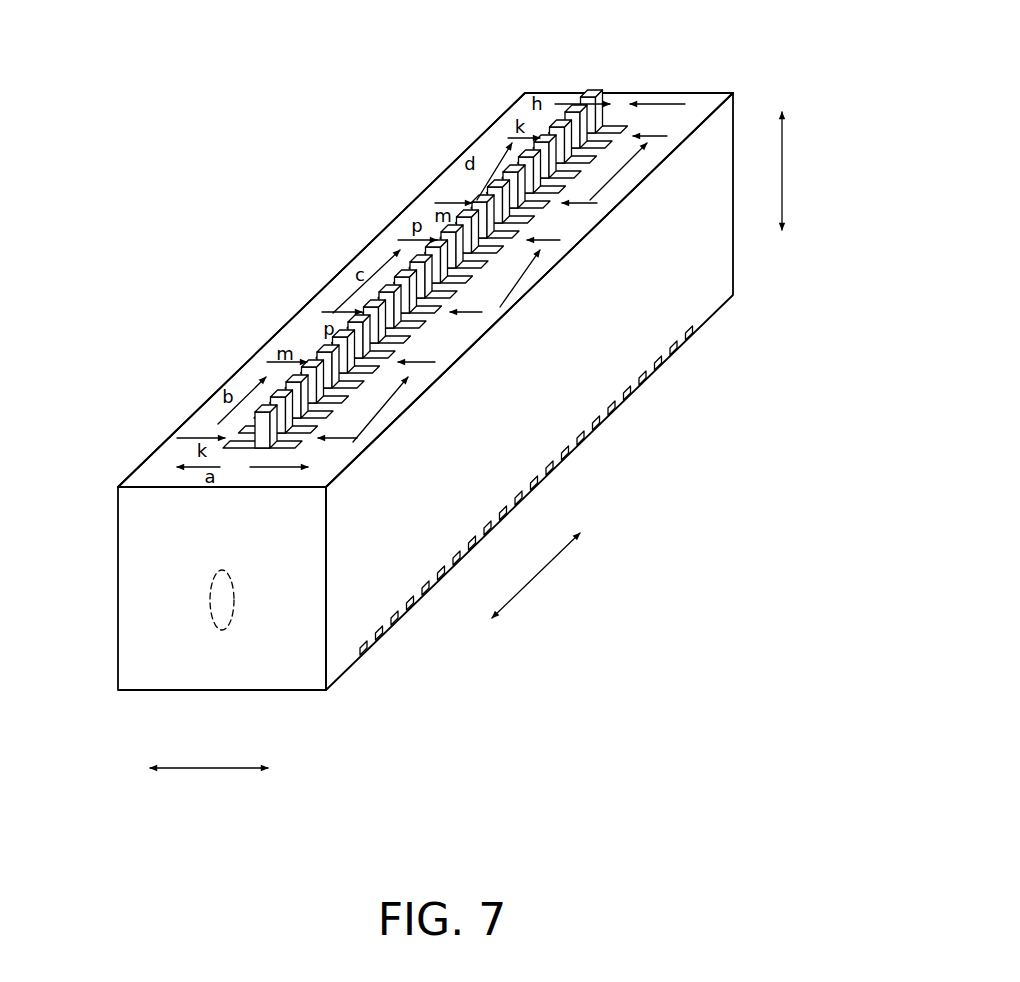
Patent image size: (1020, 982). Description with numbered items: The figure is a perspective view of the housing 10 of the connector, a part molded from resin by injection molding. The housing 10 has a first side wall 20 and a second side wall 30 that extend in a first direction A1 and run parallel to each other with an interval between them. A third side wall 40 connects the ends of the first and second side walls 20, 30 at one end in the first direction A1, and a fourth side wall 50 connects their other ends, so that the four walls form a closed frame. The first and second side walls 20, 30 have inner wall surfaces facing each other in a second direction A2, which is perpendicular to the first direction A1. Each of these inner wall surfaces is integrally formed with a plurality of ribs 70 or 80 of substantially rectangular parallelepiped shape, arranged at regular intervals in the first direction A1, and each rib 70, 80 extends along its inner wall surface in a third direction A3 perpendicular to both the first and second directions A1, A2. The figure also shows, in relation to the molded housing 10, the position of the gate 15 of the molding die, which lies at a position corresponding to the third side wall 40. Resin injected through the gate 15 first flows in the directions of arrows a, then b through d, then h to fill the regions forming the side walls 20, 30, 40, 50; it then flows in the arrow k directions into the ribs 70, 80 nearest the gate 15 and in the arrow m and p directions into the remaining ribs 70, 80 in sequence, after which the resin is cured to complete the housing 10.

The housing 10 is at (441, 166).
The gate 15 is at (223, 632).
The first side wall 20 is at (327, 298).
The second side wall 30 is at (537, 441).
The third side wall 40 is at (135, 627).
The fourth side wall 50 is at (620, 95).
The ribs 70 is at (420, 252).
The ribs 80 is at (343, 423).
The first direction A1 is at (532, 580).
The second direction A2 is at (213, 775).
The third direction A3 is at (790, 170).